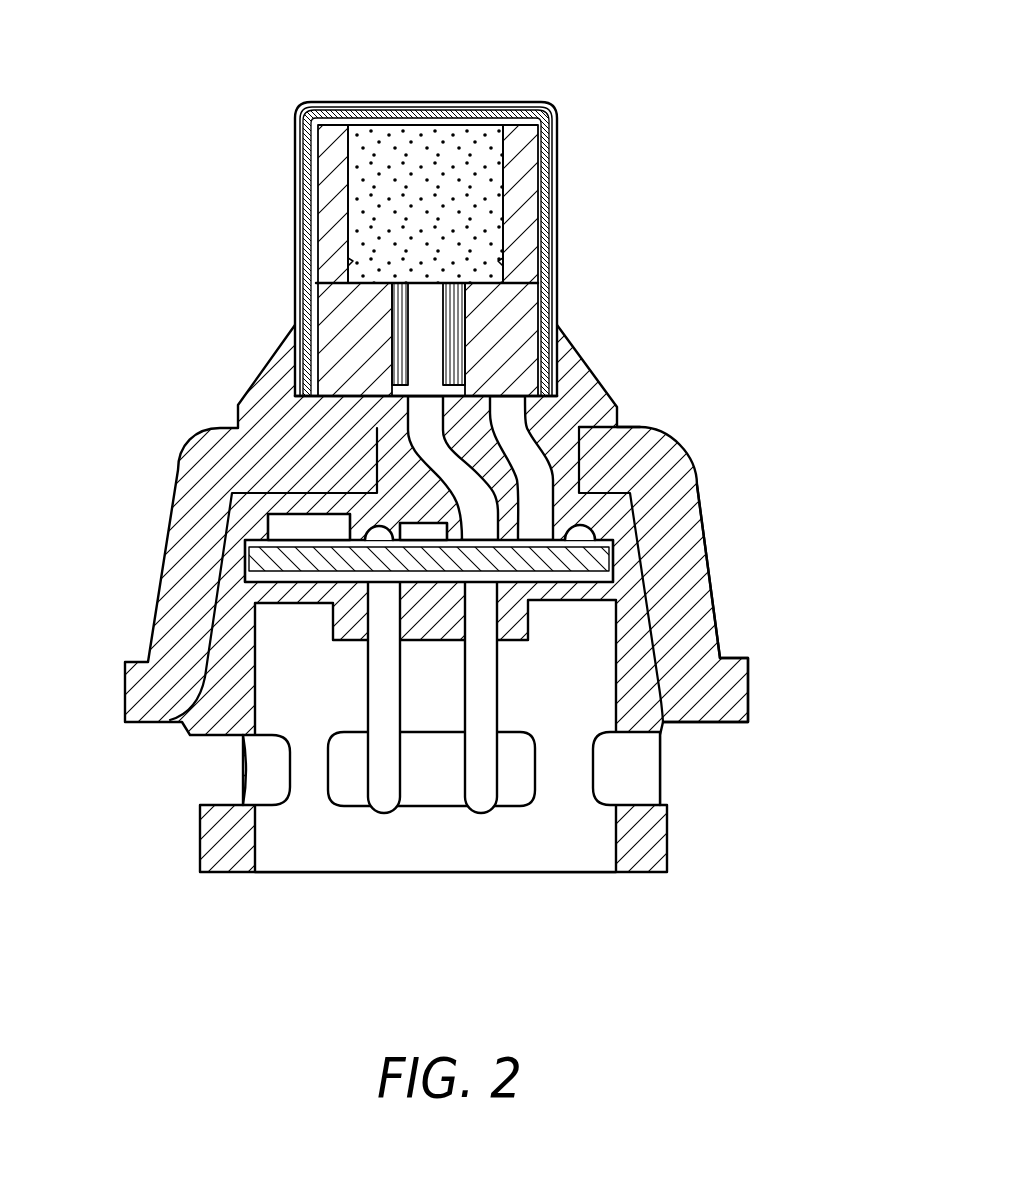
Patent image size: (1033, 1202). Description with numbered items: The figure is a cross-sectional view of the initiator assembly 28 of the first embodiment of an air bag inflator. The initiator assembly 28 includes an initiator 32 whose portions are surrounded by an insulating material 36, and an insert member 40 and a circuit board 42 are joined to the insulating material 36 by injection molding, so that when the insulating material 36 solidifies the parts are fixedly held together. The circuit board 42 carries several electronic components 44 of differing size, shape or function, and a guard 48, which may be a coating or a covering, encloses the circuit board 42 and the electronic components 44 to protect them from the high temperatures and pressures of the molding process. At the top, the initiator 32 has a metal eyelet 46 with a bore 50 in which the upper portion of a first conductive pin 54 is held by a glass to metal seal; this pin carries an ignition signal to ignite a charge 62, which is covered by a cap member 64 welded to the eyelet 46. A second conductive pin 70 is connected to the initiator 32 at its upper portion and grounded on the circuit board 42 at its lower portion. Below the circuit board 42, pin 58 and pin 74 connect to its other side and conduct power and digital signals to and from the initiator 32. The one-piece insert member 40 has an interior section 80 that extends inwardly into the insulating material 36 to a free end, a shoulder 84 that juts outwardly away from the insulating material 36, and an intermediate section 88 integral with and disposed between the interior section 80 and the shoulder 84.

The initiator assembly 28 is at (463, 483).
The initiator 32 is at (427, 200).
The insulating material 36 is at (270, 390).
The insert member 40 is at (711, 494).
The circuit board 42 is at (287, 562).
The electronic components 44 is at (280, 513).
The metal eyelet 46 is at (495, 303).
The guard 48 is at (614, 553).
The bore 50 is at (398, 312).
The first conductive pin 54 is at (420, 343).
The pin 58 is at (483, 795).
The charge 62 is at (455, 168).
The cap member 64 is at (383, 110).
The second conductive pin 70 is at (512, 423).
The pin 74 is at (383, 790).
The interior section 80 is at (600, 447).
The shoulder 84 is at (730, 678).
The intermediate section 88 is at (683, 600).